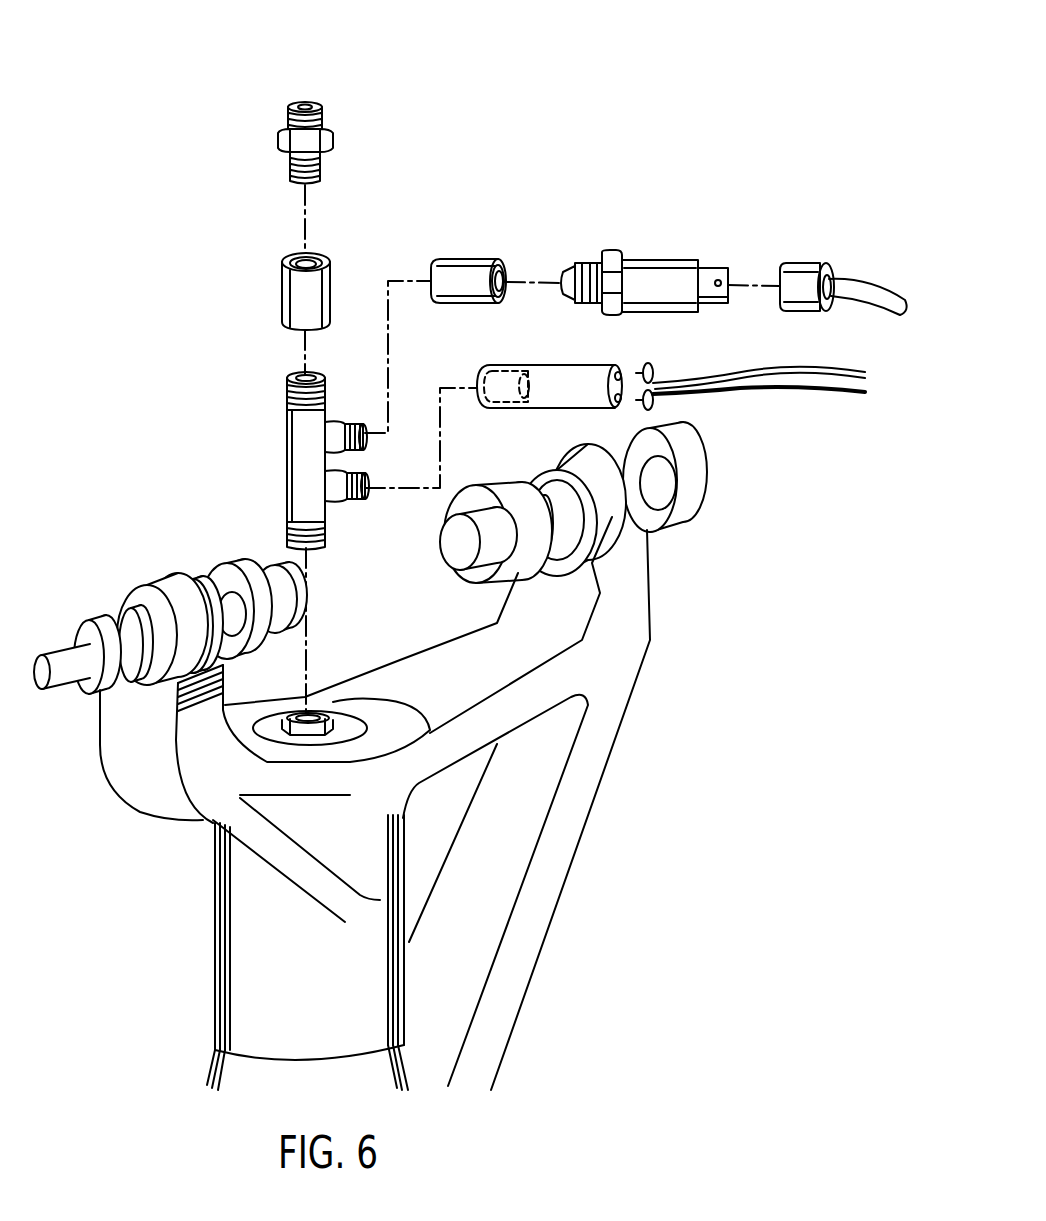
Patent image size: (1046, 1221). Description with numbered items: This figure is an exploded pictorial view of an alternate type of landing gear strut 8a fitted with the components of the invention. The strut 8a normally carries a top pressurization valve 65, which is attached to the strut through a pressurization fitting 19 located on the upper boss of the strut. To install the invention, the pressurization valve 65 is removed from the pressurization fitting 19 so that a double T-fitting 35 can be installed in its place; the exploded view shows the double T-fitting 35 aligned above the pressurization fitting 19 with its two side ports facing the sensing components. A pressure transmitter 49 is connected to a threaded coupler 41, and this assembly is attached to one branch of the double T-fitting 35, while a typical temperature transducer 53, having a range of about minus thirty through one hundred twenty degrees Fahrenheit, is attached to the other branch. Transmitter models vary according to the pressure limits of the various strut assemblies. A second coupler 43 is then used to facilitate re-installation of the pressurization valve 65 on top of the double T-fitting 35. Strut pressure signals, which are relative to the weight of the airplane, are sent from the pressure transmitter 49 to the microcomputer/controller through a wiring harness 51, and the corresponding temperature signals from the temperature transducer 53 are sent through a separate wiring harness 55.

The top pressurization valve 65 is at (298, 104).
The second coupler 43 is at (285, 290).
The double T-fitting 35 is at (283, 440).
The threaded coupler 41 is at (450, 262).
The pressure transmitter 49 is at (656, 262).
The wiring harness 51 is at (857, 280).
The temperature transducer 53 is at (507, 408).
The wiring harness 55 is at (742, 377).
The pressurization fitting 19 is at (333, 702).
The landing gear strut 8a is at (275, 940).